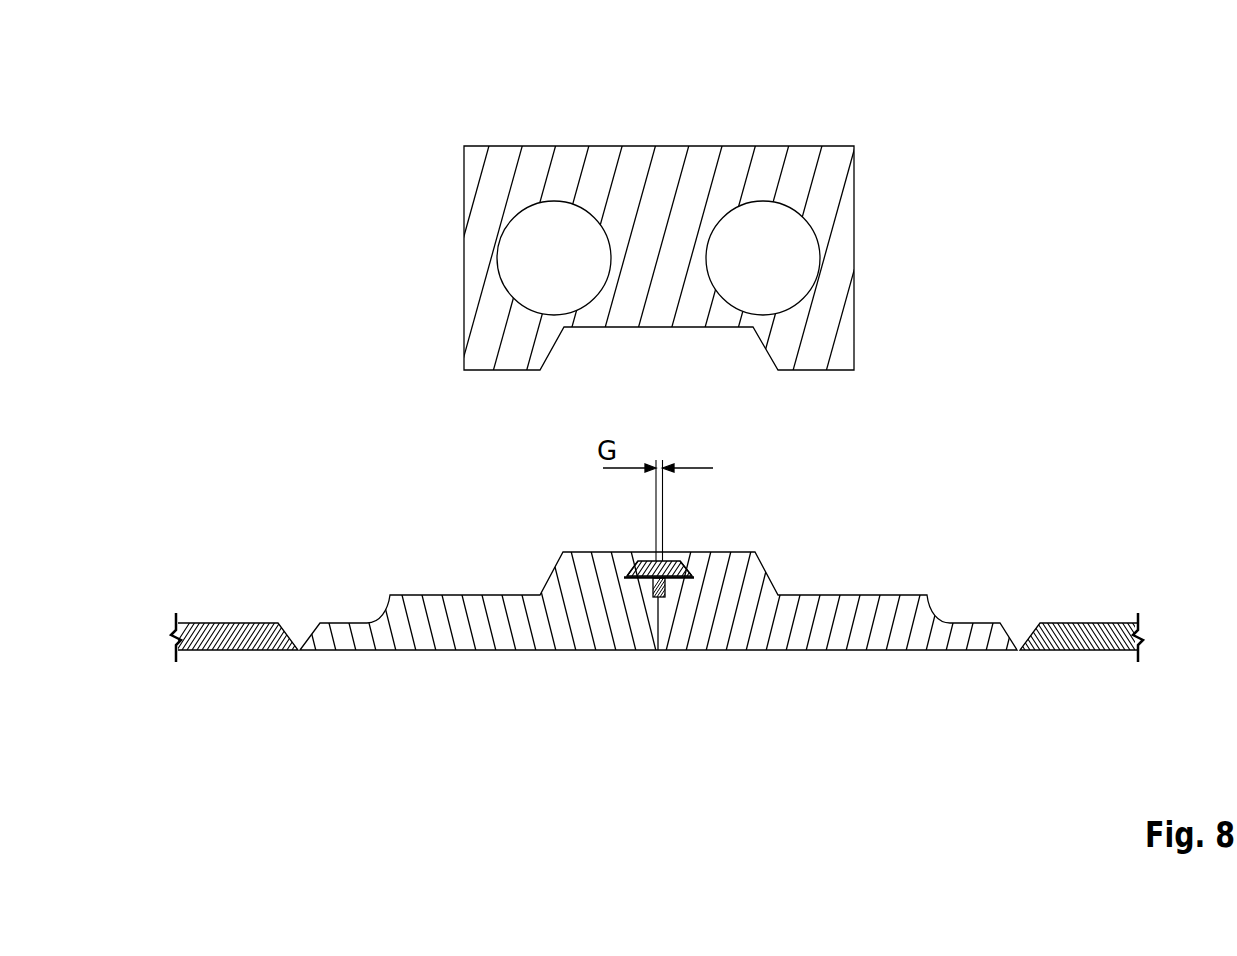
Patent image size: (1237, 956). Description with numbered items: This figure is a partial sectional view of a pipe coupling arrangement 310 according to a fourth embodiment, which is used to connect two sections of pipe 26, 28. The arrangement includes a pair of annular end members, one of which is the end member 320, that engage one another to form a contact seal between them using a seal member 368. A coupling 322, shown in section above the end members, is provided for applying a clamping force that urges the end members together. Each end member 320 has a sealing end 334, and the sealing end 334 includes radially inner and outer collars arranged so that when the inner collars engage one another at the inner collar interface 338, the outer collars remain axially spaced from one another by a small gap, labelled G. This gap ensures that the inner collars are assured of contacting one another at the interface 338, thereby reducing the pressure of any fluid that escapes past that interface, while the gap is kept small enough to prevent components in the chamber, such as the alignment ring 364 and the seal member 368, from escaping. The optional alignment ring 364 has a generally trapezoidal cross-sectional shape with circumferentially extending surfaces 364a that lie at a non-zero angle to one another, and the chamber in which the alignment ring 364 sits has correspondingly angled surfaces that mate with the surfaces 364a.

The pipe coupling arrangement 310 is at (1083, 70).
The coupling 322 is at (464, 172).
The section of pipe 26 is at (208, 638).
The section of pipe 28 is at (1062, 645).
The annular end member 320 is at (327, 640).
The sealing end 334 is at (462, 630).
The inner collar interface 338 is at (657, 637).
The alignment ring 364 is at (648, 560).
The circumferentially extending surface 364a is at (632, 570).
The seal member 368 is at (665, 590).